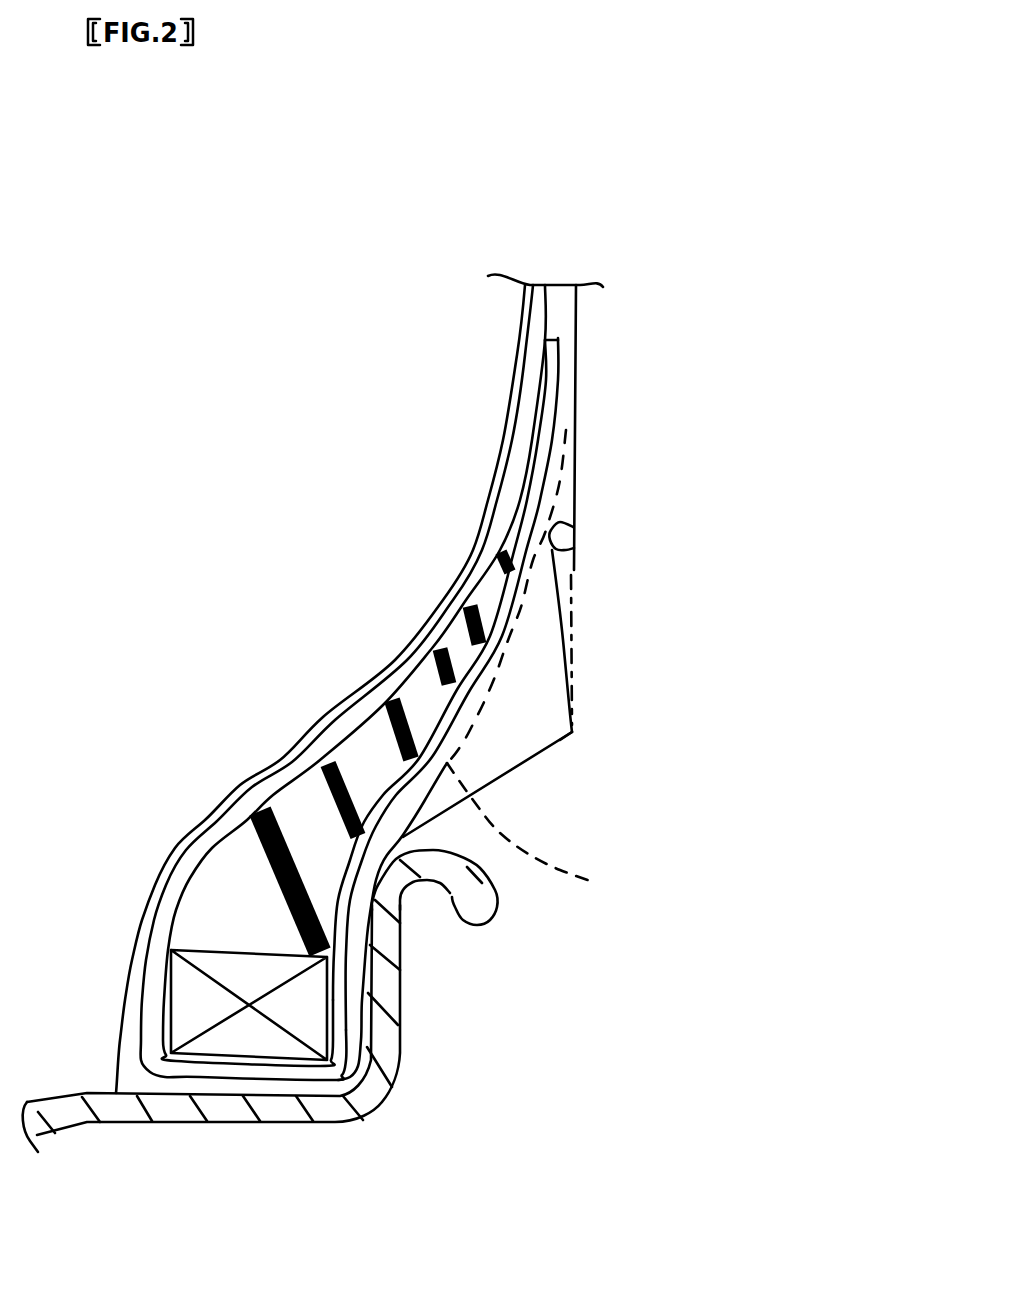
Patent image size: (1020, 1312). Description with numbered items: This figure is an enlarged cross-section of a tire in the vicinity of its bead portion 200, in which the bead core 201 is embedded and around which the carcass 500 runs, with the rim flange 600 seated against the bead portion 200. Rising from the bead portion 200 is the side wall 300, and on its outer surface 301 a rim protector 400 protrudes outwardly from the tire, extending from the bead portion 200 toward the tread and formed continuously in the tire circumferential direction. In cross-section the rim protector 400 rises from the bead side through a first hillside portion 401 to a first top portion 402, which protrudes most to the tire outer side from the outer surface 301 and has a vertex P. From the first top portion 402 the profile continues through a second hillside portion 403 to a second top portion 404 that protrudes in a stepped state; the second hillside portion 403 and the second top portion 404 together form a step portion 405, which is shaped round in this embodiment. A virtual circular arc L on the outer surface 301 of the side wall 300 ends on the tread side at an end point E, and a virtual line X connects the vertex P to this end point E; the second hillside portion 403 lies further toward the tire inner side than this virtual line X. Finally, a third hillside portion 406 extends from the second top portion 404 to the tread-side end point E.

The bead portion 200 is at (145, 887).
The bead core 201 is at (240, 1030).
The side wall 300 is at (597, 335).
The outer surface 301 is at (567, 838).
The rim protector 400 is at (512, 730).
The first hillside portion 401 is at (520, 762).
The first top portion 402 is at (572, 732).
The second hillside portion 403 is at (568, 637).
The second top portion 404 is at (568, 530).
The step portion 405 is at (575, 548).
The third hillside portion 406 is at (577, 470).
The carcass 500 is at (503, 437).
The rim flange 600 is at (392, 1092).
The end point E is at (577, 392).
The virtual circular arc L is at (478, 718).
The virtual line X is at (570, 612).
The vertex P is at (572, 732).